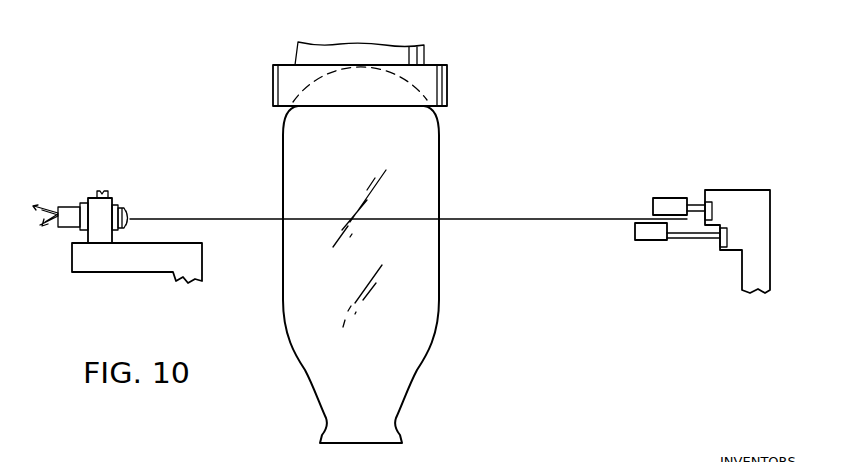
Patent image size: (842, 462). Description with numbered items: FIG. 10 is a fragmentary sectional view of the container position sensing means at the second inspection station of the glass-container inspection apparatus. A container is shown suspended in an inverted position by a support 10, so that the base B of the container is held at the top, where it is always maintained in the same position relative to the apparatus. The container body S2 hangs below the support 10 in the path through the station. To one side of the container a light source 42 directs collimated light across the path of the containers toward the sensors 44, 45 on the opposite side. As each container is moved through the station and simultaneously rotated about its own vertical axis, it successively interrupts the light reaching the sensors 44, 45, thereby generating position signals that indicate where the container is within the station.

The support 10 is at (426, 58).
The base B is at (426, 93).
The inspection station S2 is at (440, 159).
The light source 42 is at (119, 206).
The container position sensor 44 is at (656, 241).
The container position sensor 45 is at (677, 205).